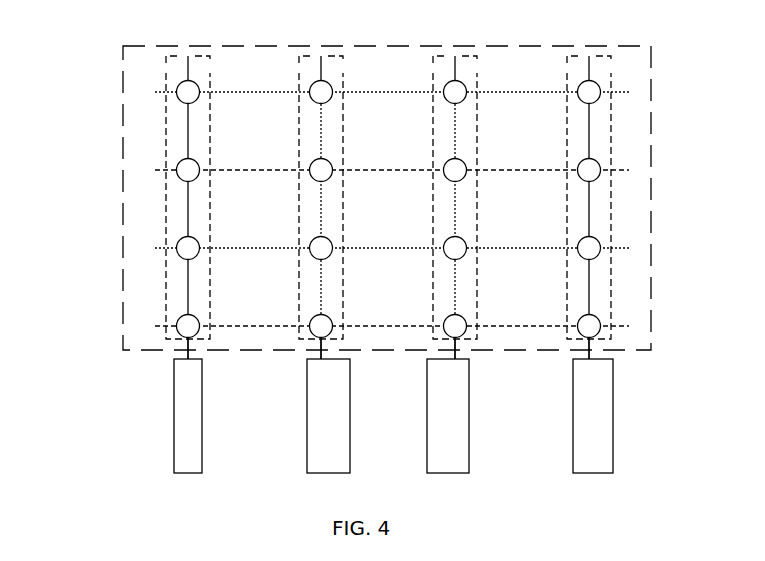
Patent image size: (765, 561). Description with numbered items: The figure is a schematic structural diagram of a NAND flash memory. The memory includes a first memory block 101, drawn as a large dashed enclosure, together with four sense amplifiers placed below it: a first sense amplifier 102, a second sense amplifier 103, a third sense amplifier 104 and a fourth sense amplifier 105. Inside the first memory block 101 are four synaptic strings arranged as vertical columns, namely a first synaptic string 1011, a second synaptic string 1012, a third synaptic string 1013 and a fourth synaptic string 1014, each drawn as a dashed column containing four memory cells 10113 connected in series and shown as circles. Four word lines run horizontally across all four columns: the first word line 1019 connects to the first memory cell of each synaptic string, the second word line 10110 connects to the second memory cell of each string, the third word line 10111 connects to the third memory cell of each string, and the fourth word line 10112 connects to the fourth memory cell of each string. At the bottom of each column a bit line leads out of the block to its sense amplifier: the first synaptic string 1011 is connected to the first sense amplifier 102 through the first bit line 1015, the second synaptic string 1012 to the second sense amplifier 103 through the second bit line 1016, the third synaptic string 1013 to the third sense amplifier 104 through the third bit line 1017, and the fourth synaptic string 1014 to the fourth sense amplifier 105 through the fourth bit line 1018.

The first memory block 101 is at (651, 113).
The first synaptic string 1011 is at (190, 54).
The second synaptic string 1012 is at (328, 55).
The third synaptic string 1013 is at (462, 55).
The fourth synaptic string 1014 is at (596, 55).
The first word line 1019 is at (158, 92).
The second word line 10110 is at (158, 170).
The third word line 10111 is at (158, 248).
The fourth word line 10112 is at (158, 326).
The memory cell 10113 is at (177, 95).
The first bit line 1015 is at (186, 345).
The second bit line 1016 is at (318, 345).
The third bit line 1017 is at (452, 345).
The fourth bit line 1018 is at (586, 345).
The first sense amplifier 102 is at (174, 418).
The second sense amplifier 103 is at (307, 418).
The third sense amplifier 104 is at (427, 418).
The fourth sense amplifier 105 is at (573, 418).